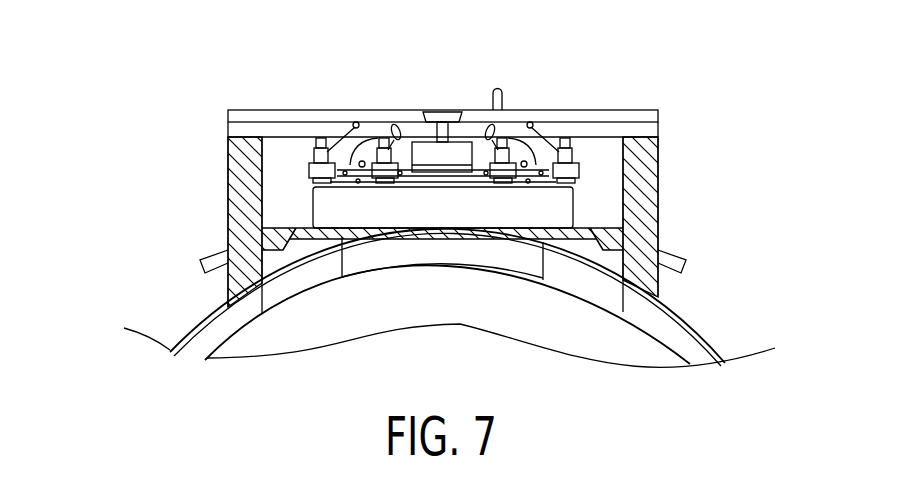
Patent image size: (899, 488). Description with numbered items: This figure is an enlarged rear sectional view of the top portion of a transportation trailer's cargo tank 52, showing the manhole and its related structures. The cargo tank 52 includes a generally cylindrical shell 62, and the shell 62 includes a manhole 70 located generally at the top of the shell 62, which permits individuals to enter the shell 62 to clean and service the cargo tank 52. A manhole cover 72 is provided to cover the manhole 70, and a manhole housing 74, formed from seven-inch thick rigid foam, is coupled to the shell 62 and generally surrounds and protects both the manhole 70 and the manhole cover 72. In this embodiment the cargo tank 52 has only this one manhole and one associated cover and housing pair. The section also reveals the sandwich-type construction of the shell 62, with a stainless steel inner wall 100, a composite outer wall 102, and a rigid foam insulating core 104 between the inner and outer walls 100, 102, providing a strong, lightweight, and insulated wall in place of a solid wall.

The cargo tank 52 is at (173, 296).
The shell 62 is at (507, 330).
The manhole 70 is at (462, 268).
The manhole cover 72 is at (590, 182).
The manhole housing 74 is at (676, 177).
The inner wall 100 is at (647, 327).
The outer wall 102 is at (693, 318).
The insulating core 104 is at (709, 364).